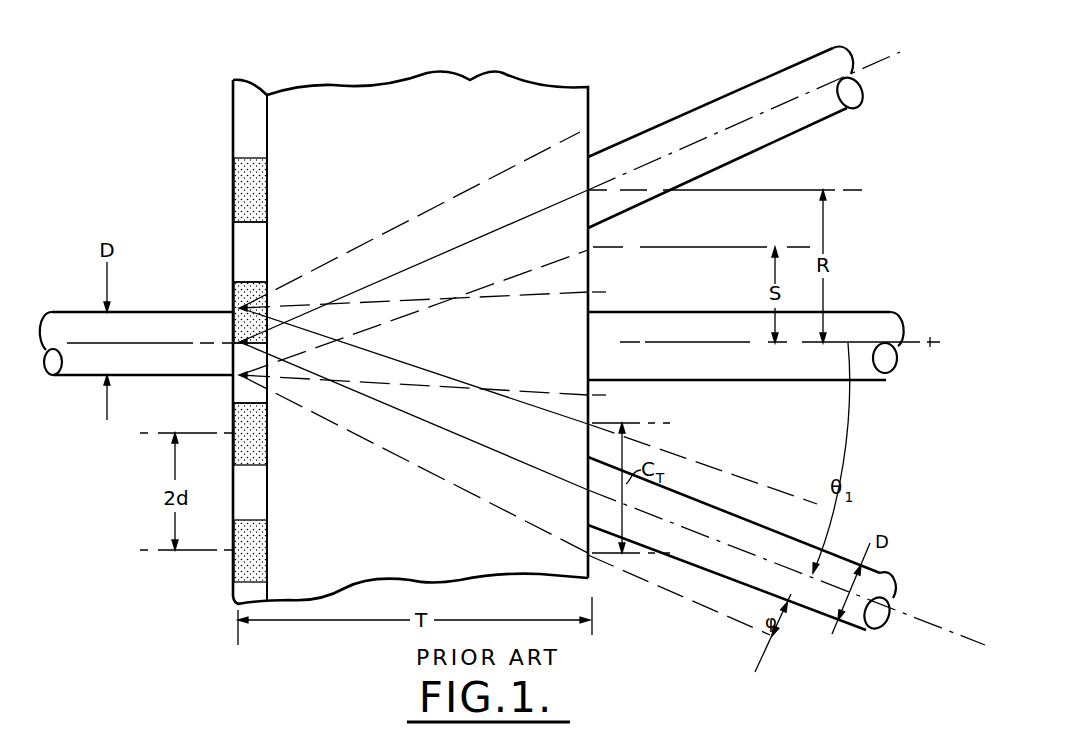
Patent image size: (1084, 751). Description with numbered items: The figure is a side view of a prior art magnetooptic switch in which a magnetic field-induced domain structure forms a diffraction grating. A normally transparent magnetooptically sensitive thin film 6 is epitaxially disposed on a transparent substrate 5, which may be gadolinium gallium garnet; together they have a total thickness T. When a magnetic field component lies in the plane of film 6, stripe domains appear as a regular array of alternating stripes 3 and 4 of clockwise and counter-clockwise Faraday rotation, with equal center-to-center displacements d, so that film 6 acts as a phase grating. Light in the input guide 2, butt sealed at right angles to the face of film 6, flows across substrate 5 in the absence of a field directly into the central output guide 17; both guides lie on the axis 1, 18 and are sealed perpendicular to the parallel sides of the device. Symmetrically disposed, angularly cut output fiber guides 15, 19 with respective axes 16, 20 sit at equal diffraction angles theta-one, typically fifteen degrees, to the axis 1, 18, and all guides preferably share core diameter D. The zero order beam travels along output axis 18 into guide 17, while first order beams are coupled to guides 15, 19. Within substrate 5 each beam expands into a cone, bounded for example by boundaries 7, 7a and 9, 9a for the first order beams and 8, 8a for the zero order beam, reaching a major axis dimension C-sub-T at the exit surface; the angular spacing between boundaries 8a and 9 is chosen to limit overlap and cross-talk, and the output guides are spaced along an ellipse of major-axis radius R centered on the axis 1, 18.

The axis 1 is at (66, 318).
The input guide 2 is at (188, 312).
The stripes 3 is at (238, 190).
The stripes 4 is at (262, 247).
The transparent substrate 5 is at (470, 92).
The magnetooptically sensitive thin film 6 is at (257, 74).
The boundary 7 is at (440, 204).
The boundary 7a is at (520, 272).
The boundary 8 is at (520, 294).
The boundary 8a is at (556, 390).
The boundary 9 is at (543, 413).
The boundary 9a is at (412, 464).
The output fiber guide 15 is at (744, 88).
The axis 16 is at (886, 62).
The central output guide 17 is at (862, 312).
The output axis 18 is at (930, 345).
The output fiber guide 19 is at (776, 530).
The axis 20 is at (928, 629).